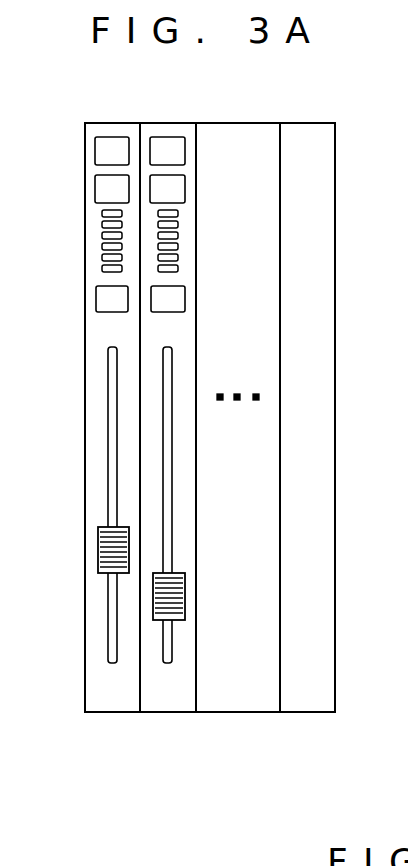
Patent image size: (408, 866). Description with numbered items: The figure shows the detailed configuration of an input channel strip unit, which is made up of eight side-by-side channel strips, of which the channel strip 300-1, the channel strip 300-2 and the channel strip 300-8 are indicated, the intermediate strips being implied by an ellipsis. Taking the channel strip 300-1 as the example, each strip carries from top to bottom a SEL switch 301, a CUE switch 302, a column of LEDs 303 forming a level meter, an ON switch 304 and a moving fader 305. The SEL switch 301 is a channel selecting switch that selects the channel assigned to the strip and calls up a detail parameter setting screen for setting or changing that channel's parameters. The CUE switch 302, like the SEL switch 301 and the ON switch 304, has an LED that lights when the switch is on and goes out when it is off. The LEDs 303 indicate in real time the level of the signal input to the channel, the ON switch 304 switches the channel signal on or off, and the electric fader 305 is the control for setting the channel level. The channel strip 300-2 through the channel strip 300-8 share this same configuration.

The channel strip 300-1 is at (115, 718).
The channel strip 300-2 is at (168, 718).
The channel strip 300-8 is at (308, 718).
The SEL switch 301 is at (96, 155).
The CUE switch 302 is at (96, 192).
The LEDs for a level meter 303 is at (95, 240).
The ON switch 304 is at (96, 304).
The moving fader 305 is at (98, 560).